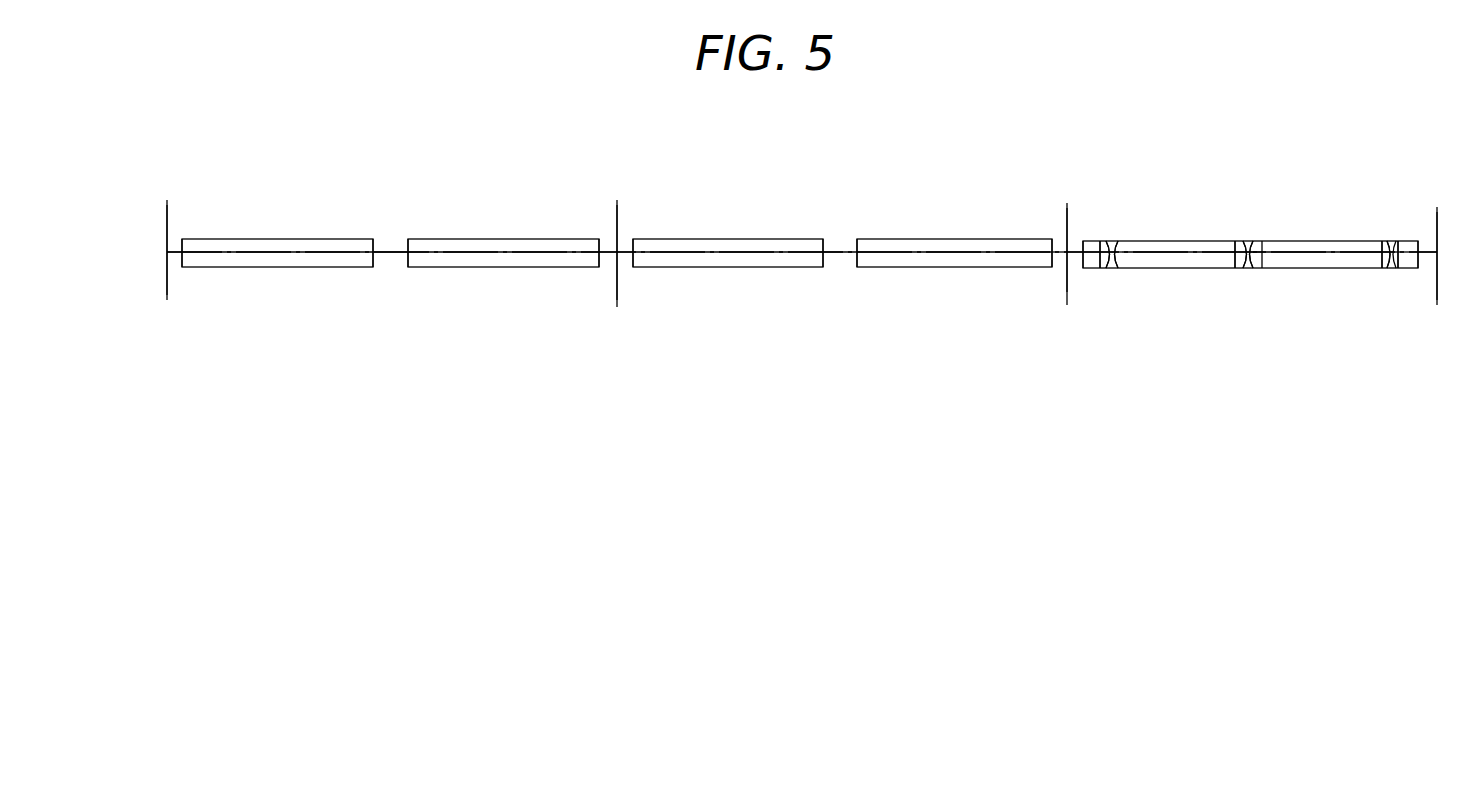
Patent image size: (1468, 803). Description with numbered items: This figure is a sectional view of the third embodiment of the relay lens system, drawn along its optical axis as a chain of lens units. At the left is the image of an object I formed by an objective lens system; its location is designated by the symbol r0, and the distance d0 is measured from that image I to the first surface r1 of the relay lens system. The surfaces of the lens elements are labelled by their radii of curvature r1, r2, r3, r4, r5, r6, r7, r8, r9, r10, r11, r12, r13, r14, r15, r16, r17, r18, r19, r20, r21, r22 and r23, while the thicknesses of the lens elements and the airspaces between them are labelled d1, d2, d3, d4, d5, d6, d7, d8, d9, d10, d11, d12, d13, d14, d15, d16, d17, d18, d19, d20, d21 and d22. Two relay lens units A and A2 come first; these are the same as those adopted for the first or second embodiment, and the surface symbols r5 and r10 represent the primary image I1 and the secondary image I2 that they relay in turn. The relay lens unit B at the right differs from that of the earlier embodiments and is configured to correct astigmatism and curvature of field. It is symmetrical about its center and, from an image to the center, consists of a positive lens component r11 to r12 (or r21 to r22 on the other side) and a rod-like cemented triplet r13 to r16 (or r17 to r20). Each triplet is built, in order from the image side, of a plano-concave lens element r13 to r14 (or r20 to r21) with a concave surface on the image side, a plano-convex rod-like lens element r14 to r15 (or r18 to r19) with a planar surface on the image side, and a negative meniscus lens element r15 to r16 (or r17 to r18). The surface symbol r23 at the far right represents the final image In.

The image of an object I is at (167, 283).
The primary image I1 is at (617, 307).
The secondary image I2 is at (1067, 297).
The final image In is at (1437, 305).
The relay lens unit A is at (183, 462).
The relay lens unit A2 is at (635, 463).
The relay lens unit B is at (1085, 463).
The image of an object r0 is at (167, 220).
The radius of curvature r1 is at (190, 240).
The radius of curvature r2 is at (368, 240).
The radius of curvature r3 is at (402, 240).
The radius of curvature r4 is at (598, 240).
The radius of curvature r5 is at (617, 218).
The radius of curvature r6 is at (637, 240).
The radius of curvature r7 is at (820, 240).
The radius of curvature r8 is at (855, 240).
The radius of curvature r9 is at (1040, 240).
The radius of curvature r10 is at (1067, 228).
The radius of curvature r11 is at (1080, 240).
The radius of curvature r12 is at (1095, 240).
The radius of curvature r13 is at (1108, 240).
The radius of curvature r14 is at (1122, 240).
The radius of curvature r15 is at (1234, 240).
The radius of curvature r16 is at (1242, 240).
The radius of curvature r17 is at (1252, 240).
The radius of curvature r18 is at (1264, 240).
The radius of curvature r19 is at (1380, 240).
The radius of curvature r20 is at (1389, 240).
The radius of curvature r21 is at (1398, 240).
The radius of curvature r22 is at (1413, 240).
The radius of curvature r23 is at (1437, 212).
The distance d0 is at (167, 252).
The thickness d1 is at (283, 268).
The airspace d2 is at (388, 268).
The thickness d3 is at (493, 268).
The airspace d4 is at (607, 268).
The airspace d5 is at (625, 268).
The thickness d6 is at (727, 268).
The airspace d7 is at (840, 268).
The thickness d8 is at (905, 268).
The airspace d9 is at (1058, 268).
The airspace d10 is at (1076, 268).
The thickness d11 is at (1092, 268).
The airspace d12 is at (1104, 268).
The thickness d13 is at (1130, 268).
The thickness d14 is at (1172, 268).
The thickness d15 is at (1236, 268).
The airspace d16 is at (1250, 268).
The thickness d17 is at (1268, 268).
The thickness d18 is at (1313, 268).
The thickness d19 is at (1372, 268).
The airspace d20 is at (1393, 268).
The thickness d21 is at (1412, 268).
The airspace d22 is at (1430, 268).